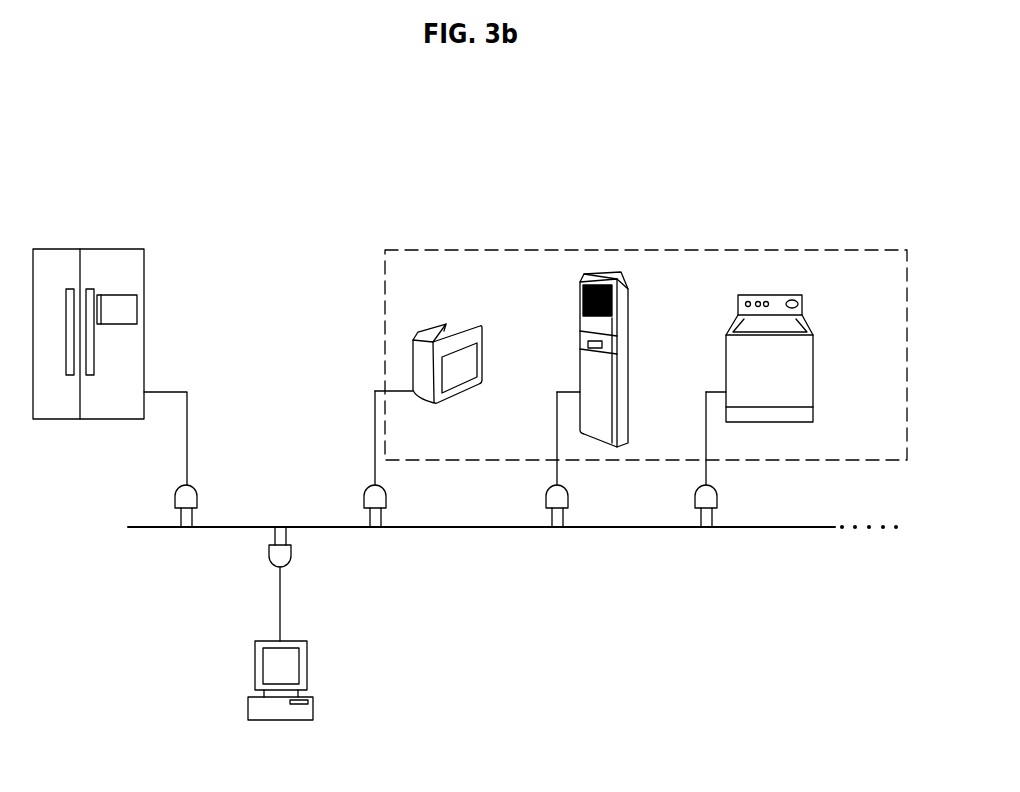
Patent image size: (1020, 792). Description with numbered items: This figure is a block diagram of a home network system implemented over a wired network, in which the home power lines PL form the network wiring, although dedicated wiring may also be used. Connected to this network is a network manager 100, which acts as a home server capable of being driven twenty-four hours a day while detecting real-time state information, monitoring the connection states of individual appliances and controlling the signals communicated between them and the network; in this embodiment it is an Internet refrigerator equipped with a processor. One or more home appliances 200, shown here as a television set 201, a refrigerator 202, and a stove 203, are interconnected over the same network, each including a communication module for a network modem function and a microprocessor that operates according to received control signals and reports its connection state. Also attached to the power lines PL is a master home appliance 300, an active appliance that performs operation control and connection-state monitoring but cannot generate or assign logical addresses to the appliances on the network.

The network manager 100 is at (104, 249).
The home appliance 200 is at (647, 250).
The television set 201 is at (484, 354).
The refrigerator 202 is at (630, 355).
The stove 203 is at (815, 353).
The master home appliance 300 is at (307, 662).
The home power lines PL is at (513, 531).